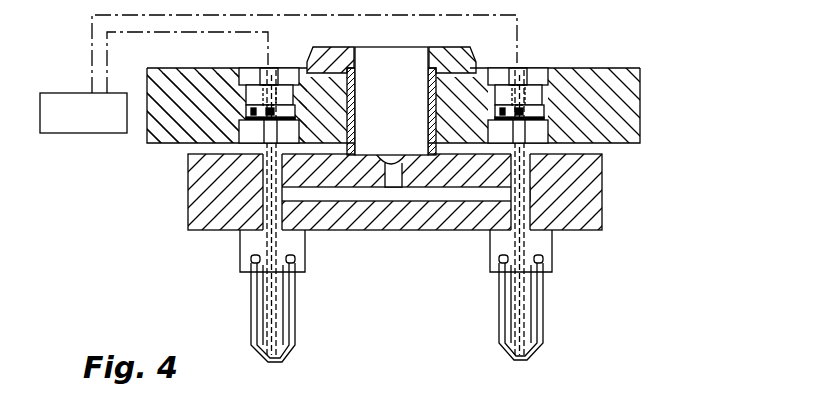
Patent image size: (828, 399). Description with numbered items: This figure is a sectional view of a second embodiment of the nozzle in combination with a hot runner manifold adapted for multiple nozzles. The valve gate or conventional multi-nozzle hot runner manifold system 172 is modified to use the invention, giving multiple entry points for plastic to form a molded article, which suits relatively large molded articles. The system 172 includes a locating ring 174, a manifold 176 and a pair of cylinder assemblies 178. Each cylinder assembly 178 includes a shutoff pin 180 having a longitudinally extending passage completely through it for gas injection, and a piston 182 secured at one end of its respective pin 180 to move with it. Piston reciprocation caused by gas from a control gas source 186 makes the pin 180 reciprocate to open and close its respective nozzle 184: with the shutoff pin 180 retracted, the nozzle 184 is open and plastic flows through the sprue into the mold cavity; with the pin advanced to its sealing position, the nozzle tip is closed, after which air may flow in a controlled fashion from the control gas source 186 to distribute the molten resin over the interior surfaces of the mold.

The multi-nozzle hot runner manifold system 172 is at (622, 56).
The locating ring 174 is at (327, 55).
The manifold 176 is at (603, 200).
The cylinder assembly 178 is at (277, 66).
The shutoff pin 180 is at (271, 247).
The piston 182 is at (236, 121).
The nozzle 184 is at (282, 357).
The control gas source 186 is at (77, 133).